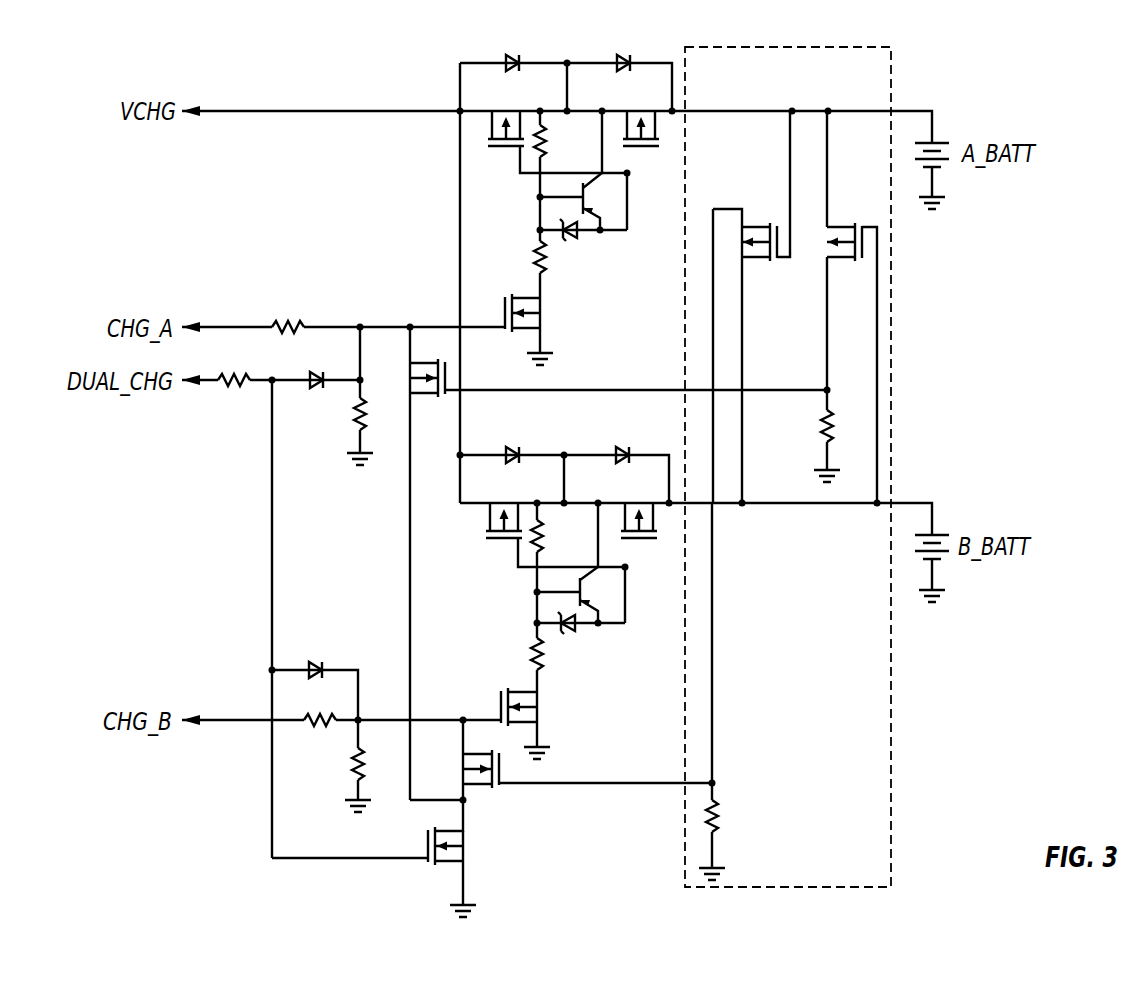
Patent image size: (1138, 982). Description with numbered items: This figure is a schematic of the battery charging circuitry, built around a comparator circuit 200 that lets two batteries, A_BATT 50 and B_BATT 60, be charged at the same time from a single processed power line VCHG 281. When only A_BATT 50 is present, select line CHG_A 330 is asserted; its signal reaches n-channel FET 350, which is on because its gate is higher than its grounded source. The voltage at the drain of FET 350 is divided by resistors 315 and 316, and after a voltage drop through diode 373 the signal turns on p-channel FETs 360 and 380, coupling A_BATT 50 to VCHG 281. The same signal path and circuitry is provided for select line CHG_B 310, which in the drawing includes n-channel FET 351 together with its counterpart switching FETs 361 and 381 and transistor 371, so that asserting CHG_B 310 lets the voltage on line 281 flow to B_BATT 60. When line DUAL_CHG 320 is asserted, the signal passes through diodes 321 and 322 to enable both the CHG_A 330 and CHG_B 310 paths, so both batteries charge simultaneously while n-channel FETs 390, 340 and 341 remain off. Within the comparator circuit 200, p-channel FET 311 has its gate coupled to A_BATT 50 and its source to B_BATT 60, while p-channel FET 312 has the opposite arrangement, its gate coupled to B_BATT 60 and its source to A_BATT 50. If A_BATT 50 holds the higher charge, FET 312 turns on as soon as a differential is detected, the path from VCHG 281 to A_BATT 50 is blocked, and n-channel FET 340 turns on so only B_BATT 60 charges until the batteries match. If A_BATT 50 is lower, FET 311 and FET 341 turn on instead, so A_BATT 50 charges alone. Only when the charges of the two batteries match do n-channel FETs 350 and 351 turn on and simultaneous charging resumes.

The A_BATT battery 50 is at (972, 140).
The B_BATT battery 60 is at (977, 567).
The comparator circuit 200 is at (893, 779).
The processed power line 281 is at (368, 110).
The select line CHG_B 310 is at (593, 186).
The p-channel FET 311 is at (751, 262).
The p-channel FET 312 is at (848, 262).
The resistor 315 is at (538, 170).
The resistor 316 is at (537, 250).
The select line DUAL_CHG 320 is at (120, 370).
The diode 321 is at (316, 372).
The diode 322 is at (322, 660).
The select line CHG_A 330 is at (130, 313).
The n-channel FET 340 is at (428, 357).
The n-channel FET 341 is at (460, 773).
The n-channel FET 350 is at (543, 320).
The n-channel FET 351 is at (540, 713).
The p-channel FET 360 is at (498, 110).
The charge switch MOSFET 361 is at (488, 520).
The bipolar transistor 371 is at (588, 580).
The diode 373 is at (570, 243).
The p-channel FET 380 is at (647, 110).
The charge switch MOSFET 381 is at (658, 523).
The n-channel FET 390 is at (467, 840).